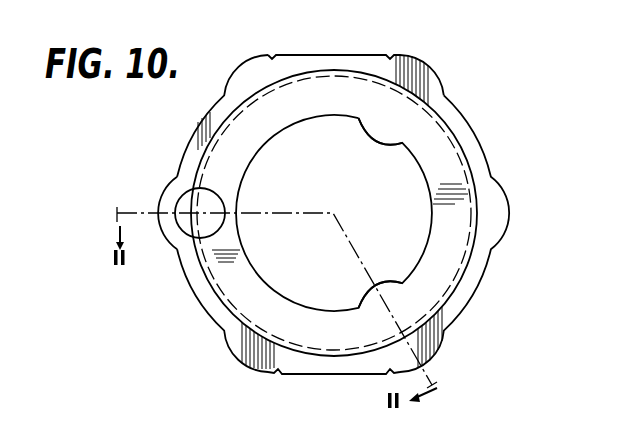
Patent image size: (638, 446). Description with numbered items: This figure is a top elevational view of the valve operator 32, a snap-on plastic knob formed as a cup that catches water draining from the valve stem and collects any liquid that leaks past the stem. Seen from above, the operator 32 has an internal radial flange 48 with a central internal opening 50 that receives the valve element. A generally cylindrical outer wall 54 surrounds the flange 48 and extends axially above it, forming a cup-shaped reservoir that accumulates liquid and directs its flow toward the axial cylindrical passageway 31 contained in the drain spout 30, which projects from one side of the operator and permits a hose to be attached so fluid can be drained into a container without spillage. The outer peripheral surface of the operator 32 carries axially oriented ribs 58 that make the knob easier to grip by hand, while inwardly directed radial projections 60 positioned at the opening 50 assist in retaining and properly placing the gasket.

The drain spout 30 is at (170, 190).
The axial cylindrical passageway 31 is at (210, 207).
The valve operator 32 is at (476, 135).
The internal radial flange 48 is at (243, 280).
The internal opening 50 is at (326, 184).
The cylindrical outer wall 54 is at (468, 282).
The axially oriented ribs 58 is at (390, 58).
The inwardly directed radial projections 60 is at (372, 138).